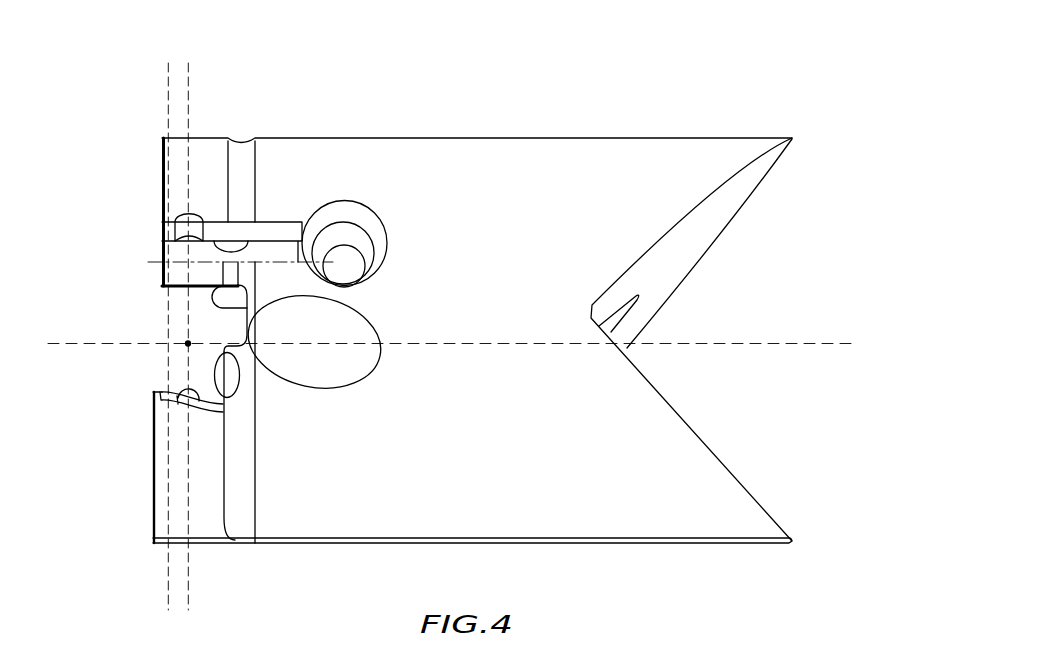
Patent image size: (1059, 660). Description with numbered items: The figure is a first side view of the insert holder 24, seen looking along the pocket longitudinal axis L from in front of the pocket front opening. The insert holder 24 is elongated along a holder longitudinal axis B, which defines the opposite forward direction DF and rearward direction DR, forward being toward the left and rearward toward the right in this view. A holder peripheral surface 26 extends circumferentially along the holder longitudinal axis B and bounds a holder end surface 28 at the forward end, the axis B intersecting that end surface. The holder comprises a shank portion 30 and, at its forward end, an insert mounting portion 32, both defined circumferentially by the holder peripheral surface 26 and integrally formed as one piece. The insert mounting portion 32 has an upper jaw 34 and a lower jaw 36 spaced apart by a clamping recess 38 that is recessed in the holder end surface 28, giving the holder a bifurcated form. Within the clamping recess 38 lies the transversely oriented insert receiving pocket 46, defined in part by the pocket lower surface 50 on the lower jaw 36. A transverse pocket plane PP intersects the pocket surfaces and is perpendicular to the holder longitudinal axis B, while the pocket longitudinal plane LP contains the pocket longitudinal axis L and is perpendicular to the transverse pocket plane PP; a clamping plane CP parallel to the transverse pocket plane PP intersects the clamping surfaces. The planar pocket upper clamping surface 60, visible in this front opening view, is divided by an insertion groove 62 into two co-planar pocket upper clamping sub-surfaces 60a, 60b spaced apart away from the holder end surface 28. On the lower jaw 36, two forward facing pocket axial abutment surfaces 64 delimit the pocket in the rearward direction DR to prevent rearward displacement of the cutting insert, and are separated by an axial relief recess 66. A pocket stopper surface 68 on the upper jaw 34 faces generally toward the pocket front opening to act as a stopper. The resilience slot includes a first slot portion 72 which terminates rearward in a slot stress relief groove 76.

The insert holder 24 is at (430, 324).
The holder peripheral surface 26 is at (412, 334).
The holder end surface 28 is at (152, 435).
The shank portion 30 is at (544, 92).
The insert mounting portion 32 is at (115, 537).
The upper jaw 34 is at (223, 339).
The lower jaw 36 is at (116, 481).
The clamping recess 38 is at (137, 368).
The insert receiving pocket 46 is at (136, 312).
The pocket lower surface 50 is at (224, 332).
The pocket upper clamping surface 60 is at (217, 170).
The pocket upper clamping sub-surface 60a is at (248, 237).
The pocket upper clamping sub-surface 60b is at (168, 235).
The insertion groove 62 is at (194, 200).
The pocket axial abutment surface 64 is at (248, 307).
The axial relief recess 66 is at (247, 350).
The pocket stopper surface 68 is at (172, 292).
The first slot portion 72 is at (294, 228).
The slot stress relief groove 76 is at (371, 210).
The clamping plane CP is at (167, 87).
The transverse pocket plane PP is at (189, 87).
The pocket longitudinal axis L is at (188, 344).
The holder longitudinal axis B is at (485, 312).
The pocket longitudinal plane LP is at (825, 344).
The forward direction DF is at (93, 372).
The rearward direction DR is at (852, 365).